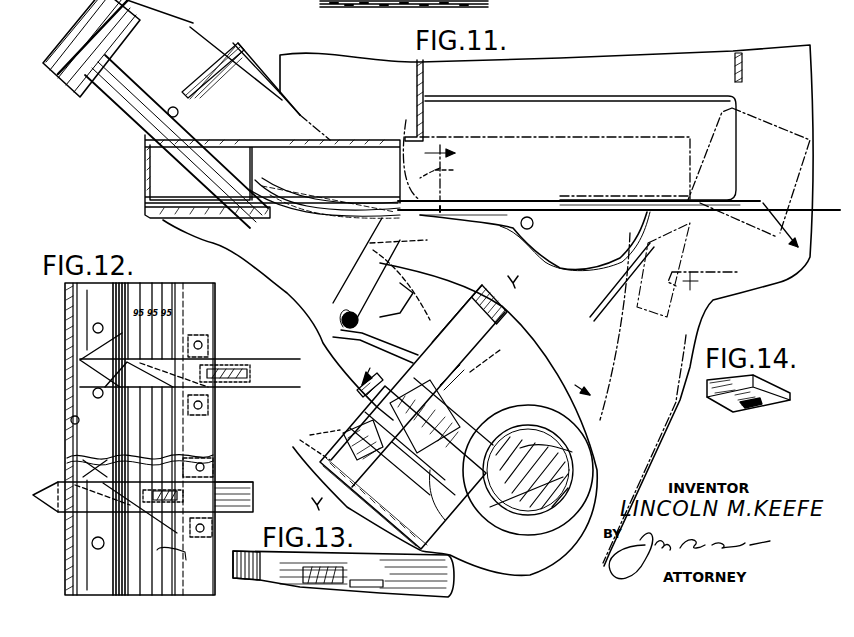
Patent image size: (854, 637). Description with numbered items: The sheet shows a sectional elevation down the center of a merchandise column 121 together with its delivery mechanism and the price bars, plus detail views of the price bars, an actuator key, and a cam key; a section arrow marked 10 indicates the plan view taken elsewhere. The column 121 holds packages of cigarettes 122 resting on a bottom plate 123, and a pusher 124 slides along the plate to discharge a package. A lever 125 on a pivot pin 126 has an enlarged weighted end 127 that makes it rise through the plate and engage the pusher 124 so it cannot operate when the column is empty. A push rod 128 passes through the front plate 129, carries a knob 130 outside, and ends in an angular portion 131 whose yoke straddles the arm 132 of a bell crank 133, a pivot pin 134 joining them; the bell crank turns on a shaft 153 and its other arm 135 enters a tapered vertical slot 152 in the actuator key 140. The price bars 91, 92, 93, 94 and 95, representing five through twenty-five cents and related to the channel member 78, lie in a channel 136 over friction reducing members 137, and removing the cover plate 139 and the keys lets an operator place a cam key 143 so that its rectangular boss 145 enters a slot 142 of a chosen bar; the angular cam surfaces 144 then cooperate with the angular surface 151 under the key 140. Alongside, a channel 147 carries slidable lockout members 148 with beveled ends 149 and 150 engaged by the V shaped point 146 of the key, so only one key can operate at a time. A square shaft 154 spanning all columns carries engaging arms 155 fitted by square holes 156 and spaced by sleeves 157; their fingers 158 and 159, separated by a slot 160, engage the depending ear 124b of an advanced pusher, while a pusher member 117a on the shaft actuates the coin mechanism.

In FIG. 11, the section line 10 is at (762, 164).
In FIG. 11, the channel member 78 is at (490, 3).
In FIG. 11, the price bar 91 is at (406, 463).
In FIG. 12, the price bar 91 is at (183, 283).
In FIG. 11, the price bar 92 is at (412, 530).
In FIG. 12, the price bar 92 is at (152, 283).
In FIG. 11, the price bar 93 is at (372, 7).
In FIG. 12, the price bar 93 is at (140, 283).
In FIG. 11, the price bar 94 is at (460, 448).
In FIG. 12, the price bar 94 is at (128, 283).
In FIG. 11, the price bar 95 is at (440, 400).
In FIG. 12, the price bar 95 is at (132, 293).
In FIG. 11, the pusher member 117a is at (593, 382).
In FIG. 11, the merchandise column 121 is at (414, 80).
In FIG. 11, the package of cigarettes 122 is at (617, 161).
In FIG. 11, the bottom plate 123 is at (582, 212).
In FIG. 11, the pusher 124 is at (290, 145).
In FIG. 11, the depending ear 124b is at (700, 240).
In FIG. 11, the lever 125 is at (462, 212).
In FIG. 11, the pivot pin 126 is at (532, 228).
In FIG. 11, the enlarged end 127 is at (574, 272).
In FIG. 11, the push rod 128 is at (142, 88).
In FIG. 11, the front plate 129 is at (145, 135).
In FIG. 11, the knob 130 is at (70, 90).
In FIG. 11, the angular portion 131 is at (330, 205).
In FIG. 11, the arm 132 is at (368, 264).
In FIG. 11, the bell crank 133 is at (340, 315).
In FIG. 11, the pivot pin 134 is at (440, 232).
In FIG. 11, the arm 135 is at (373, 365).
In FIG. 12, the arm 135 is at (175, 490).
In FIG. 11, the channel 136 is at (395, 455).
In FIG. 11, the friction reducing members 137 is at (450, 502).
In FIG. 11, the cover plate 139 is at (330, 428).
In FIG. 11, the actuator key 140 is at (480, 350).
In FIG. 12, the actuator key 140 is at (222, 483).
In FIG. 13, the actuator key 140 is at (453, 573).
In FIG. 12, the slot 142 is at (188, 556).
In FIG. 14, the actuator cam 143 is at (727, 408).
In FIG. 12, the cam surfaces 144 is at (183, 496).
In FIG. 14, the cam surfaces 144 is at (770, 390).
In FIG. 14, the rectangular boss 145 is at (752, 406).
In FIG. 12, the V shaped point 146 is at (48, 500).
In FIG. 13, the V shaped point 146 is at (245, 582).
In FIG. 11, the channel 147 is at (300, 440).
In FIG. 12, the channel 147 is at (72, 420).
In FIG. 11, the slidable members 148 is at (355, 392).
In FIG. 12, the slidable members 148 is at (90, 300).
In FIG. 12, the beveled end 149 is at (82, 360).
In FIG. 12, the beveled end 150 is at (107, 455).
In FIG. 11, the angular surface 151 is at (454, 382).
In FIG. 13, the angular surface 151 is at (300, 590).
In FIG. 11, the vertical slot 152 is at (470, 372).
In FIG. 12, the vertical slot 152 is at (255, 367).
In FIG. 13, the vertical slot 152 is at (372, 580).
In FIG. 11, the shaft 153 is at (316, 330).
In FIG. 11, the square shaft 154 is at (565, 474).
In FIG. 11, the engaging arm 155 is at (612, 357).
In FIG. 11, the square hole 156 is at (527, 543).
In FIG. 11, the spacer sleeve 157 is at (551, 447).
In FIG. 11, the finger 158 is at (682, 248).
In FIG. 11, the finger 159 is at (693, 283).
In FIG. 11, the slot 160 is at (721, 275).